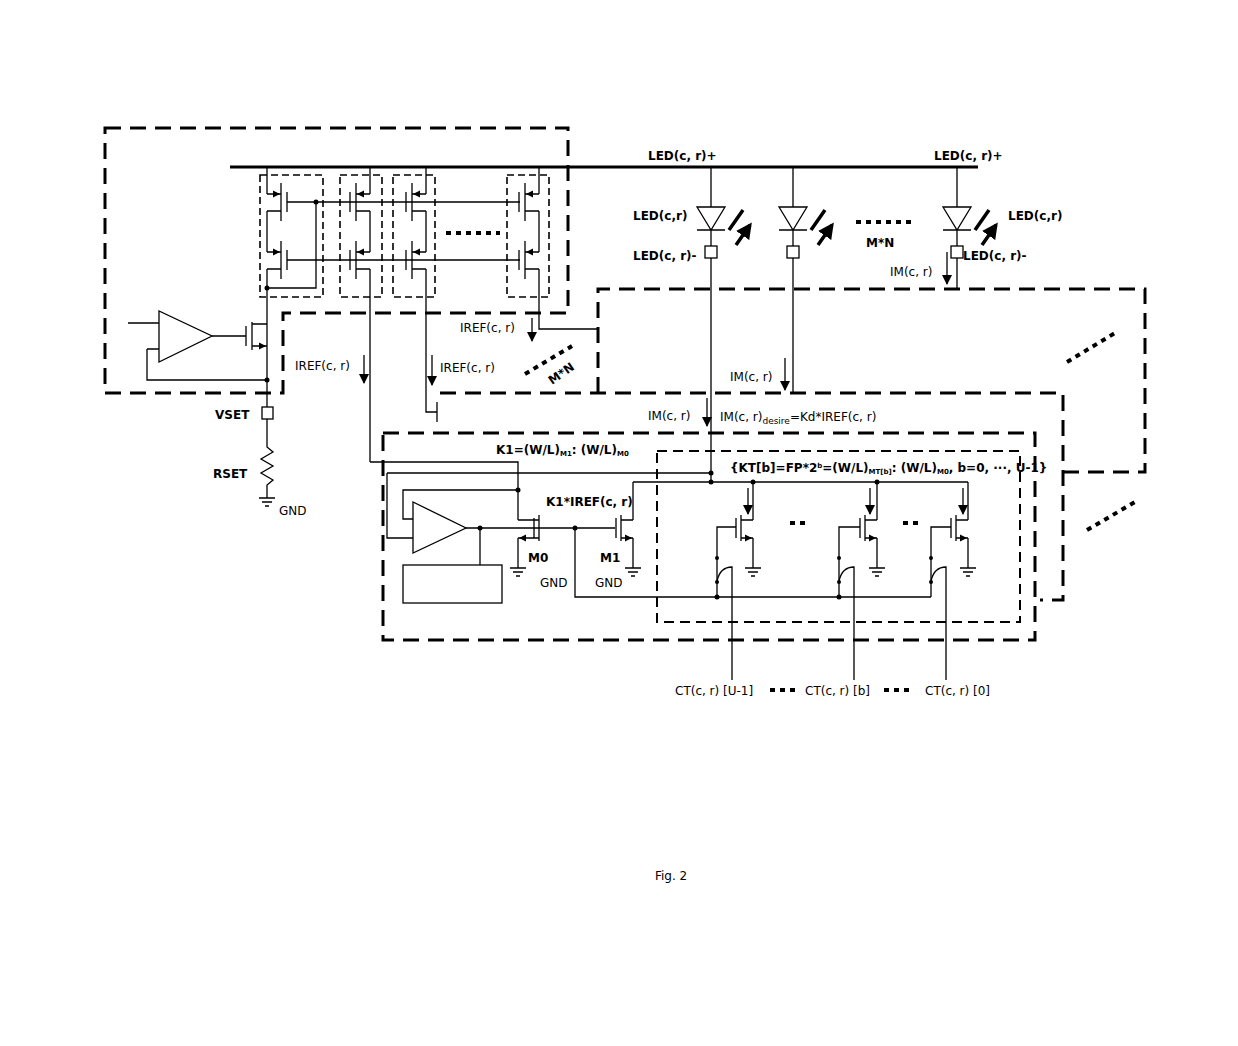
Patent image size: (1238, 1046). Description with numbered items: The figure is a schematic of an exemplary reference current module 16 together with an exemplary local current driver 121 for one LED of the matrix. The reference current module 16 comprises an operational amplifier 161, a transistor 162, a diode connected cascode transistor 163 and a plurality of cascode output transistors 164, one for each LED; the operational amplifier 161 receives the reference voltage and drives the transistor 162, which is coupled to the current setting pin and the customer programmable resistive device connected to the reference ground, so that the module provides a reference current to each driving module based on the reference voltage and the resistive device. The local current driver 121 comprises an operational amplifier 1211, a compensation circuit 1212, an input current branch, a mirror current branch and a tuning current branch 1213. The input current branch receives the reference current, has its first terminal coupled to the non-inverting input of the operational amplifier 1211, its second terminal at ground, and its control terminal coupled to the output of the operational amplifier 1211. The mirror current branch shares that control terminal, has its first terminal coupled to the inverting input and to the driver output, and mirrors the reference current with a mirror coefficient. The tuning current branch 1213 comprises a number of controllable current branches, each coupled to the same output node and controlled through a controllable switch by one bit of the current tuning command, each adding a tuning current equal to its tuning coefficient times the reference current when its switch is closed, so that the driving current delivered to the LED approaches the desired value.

The reference current module 16 is at (270, 128).
The operational amplifier 161 is at (164, 312).
The transistor 162 is at (246, 320).
The diode connected cascode transistor 163 is at (261, 249).
The cascode output transistors 164 is at (360, 160).
The local current driver 121 is at (1145, 442).
The operational amplifier 1211 is at (445, 517).
The compensation circuit 1212 is at (452, 603).
The tuning current branch 1213 is at (657, 612).